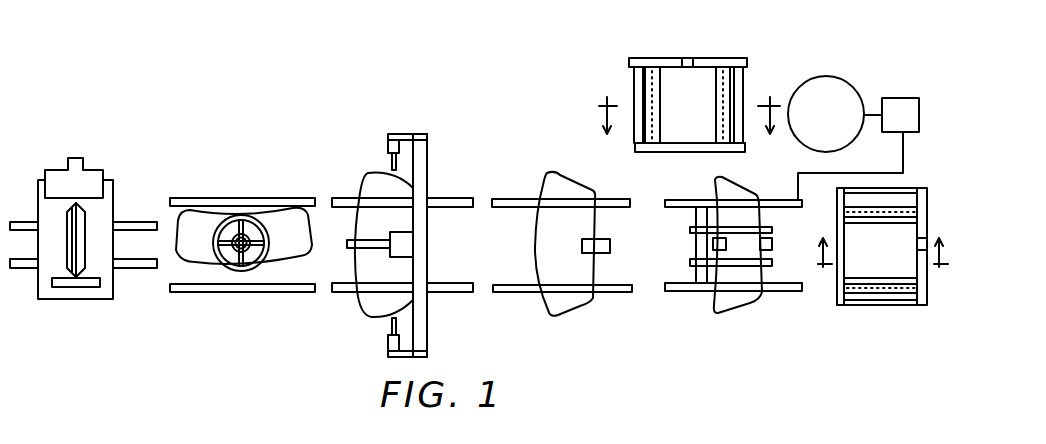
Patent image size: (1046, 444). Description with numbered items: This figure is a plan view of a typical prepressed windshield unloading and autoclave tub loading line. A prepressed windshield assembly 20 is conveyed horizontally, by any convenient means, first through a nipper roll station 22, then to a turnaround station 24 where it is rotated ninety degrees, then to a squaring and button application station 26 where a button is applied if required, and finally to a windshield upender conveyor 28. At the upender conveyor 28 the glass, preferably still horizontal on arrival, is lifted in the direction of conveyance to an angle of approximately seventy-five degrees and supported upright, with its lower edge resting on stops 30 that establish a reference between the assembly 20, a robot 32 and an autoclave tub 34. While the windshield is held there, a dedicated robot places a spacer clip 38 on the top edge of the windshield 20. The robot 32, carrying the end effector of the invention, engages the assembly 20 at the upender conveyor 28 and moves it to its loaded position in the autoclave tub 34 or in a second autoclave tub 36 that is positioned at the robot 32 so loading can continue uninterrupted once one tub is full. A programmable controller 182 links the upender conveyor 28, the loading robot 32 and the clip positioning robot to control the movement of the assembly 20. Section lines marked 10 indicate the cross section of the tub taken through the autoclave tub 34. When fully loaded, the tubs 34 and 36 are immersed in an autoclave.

The section line 10- 10 is at (882, 241).
The prepressed windshield assembly 20 is at (552, 317).
The nipper roll station 22 is at (78, 130).
The turnaround station 24 is at (248, 165).
The squaring and button application station 26 is at (415, 88).
The windshield upender conveyor 28 is at (719, 264).
The stops 30 is at (772, 244).
The robot 32 is at (832, 76).
The autoclave tub 34 is at (703, 58).
The autoclave tub 36 is at (870, 305).
The spacer clip 38 is at (713, 244).
The programmable controller 182 is at (903, 98).